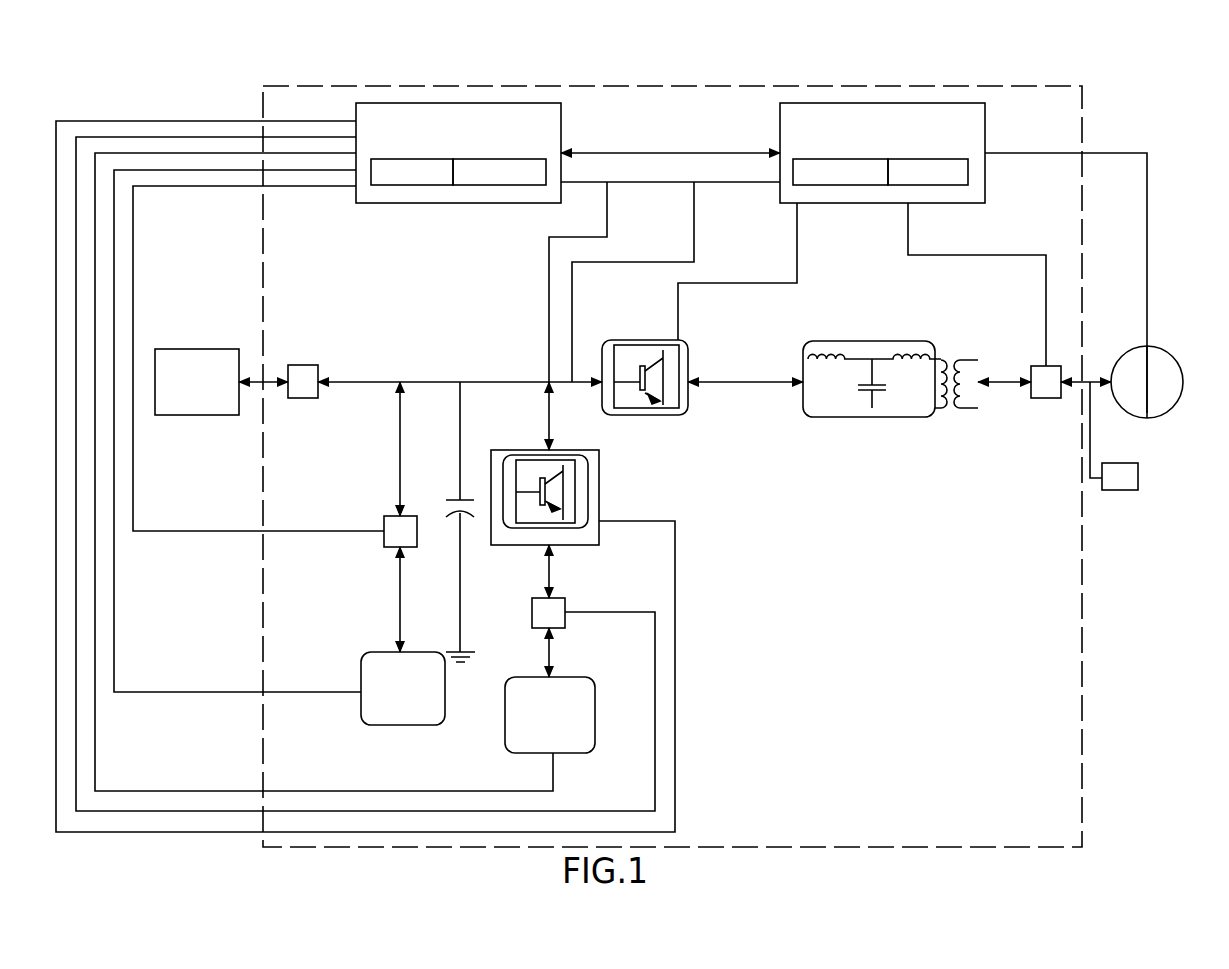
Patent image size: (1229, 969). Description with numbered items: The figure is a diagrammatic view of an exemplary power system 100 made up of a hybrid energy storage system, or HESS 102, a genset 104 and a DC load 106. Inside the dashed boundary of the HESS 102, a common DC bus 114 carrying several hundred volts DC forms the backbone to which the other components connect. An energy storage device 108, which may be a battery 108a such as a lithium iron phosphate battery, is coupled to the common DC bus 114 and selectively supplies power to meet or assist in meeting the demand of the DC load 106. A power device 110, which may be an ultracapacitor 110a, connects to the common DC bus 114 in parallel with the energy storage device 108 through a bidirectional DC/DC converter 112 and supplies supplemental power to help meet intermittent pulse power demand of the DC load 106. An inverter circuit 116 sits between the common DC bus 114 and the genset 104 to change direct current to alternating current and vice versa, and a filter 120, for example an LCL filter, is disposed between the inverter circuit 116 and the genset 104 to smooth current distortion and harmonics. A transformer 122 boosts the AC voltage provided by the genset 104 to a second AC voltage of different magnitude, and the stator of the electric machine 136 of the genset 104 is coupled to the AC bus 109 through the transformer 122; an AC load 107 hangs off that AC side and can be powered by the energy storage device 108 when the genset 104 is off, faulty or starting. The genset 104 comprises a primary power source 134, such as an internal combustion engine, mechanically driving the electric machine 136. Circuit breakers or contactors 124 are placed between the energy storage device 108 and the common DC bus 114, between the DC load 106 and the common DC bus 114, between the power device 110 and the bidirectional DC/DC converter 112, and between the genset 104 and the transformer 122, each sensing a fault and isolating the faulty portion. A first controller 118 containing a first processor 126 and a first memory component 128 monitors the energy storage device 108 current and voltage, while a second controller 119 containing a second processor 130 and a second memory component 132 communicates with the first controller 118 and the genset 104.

The power system 100 is at (1155, 140).
The HESS 102 is at (255, 99).
The genset 104 is at (1152, 377).
The DC load 106 is at (182, 392).
The AC load 107 is at (1105, 487).
The energy storage device 108 is at (403, 688).
The battery 108a is at (403, 688).
The AC bus 109 is at (1089, 375).
The power device 110 is at (550, 715).
The ultracapacitor 110a is at (550, 715).
The bidirectional DC/DC converter 112 is at (600, 495).
The common DC bus 114 is at (527, 381).
The inverter circuit 116 is at (646, 340).
The first controller 118 is at (447, 144).
The second controller 119 is at (863, 144).
The filter 120 is at (872, 341).
The transformer 122 is at (960, 360).
The circuit breaker 124 is at (298, 365).
The first processor 126 is at (485, 184).
The first memory component 128 is at (396, 184).
The second processor 130 is at (824, 184).
The second memory component 132 is at (914, 184).
The primary power source 134 is at (1160, 362).
The electric machine 136 is at (1138, 363).